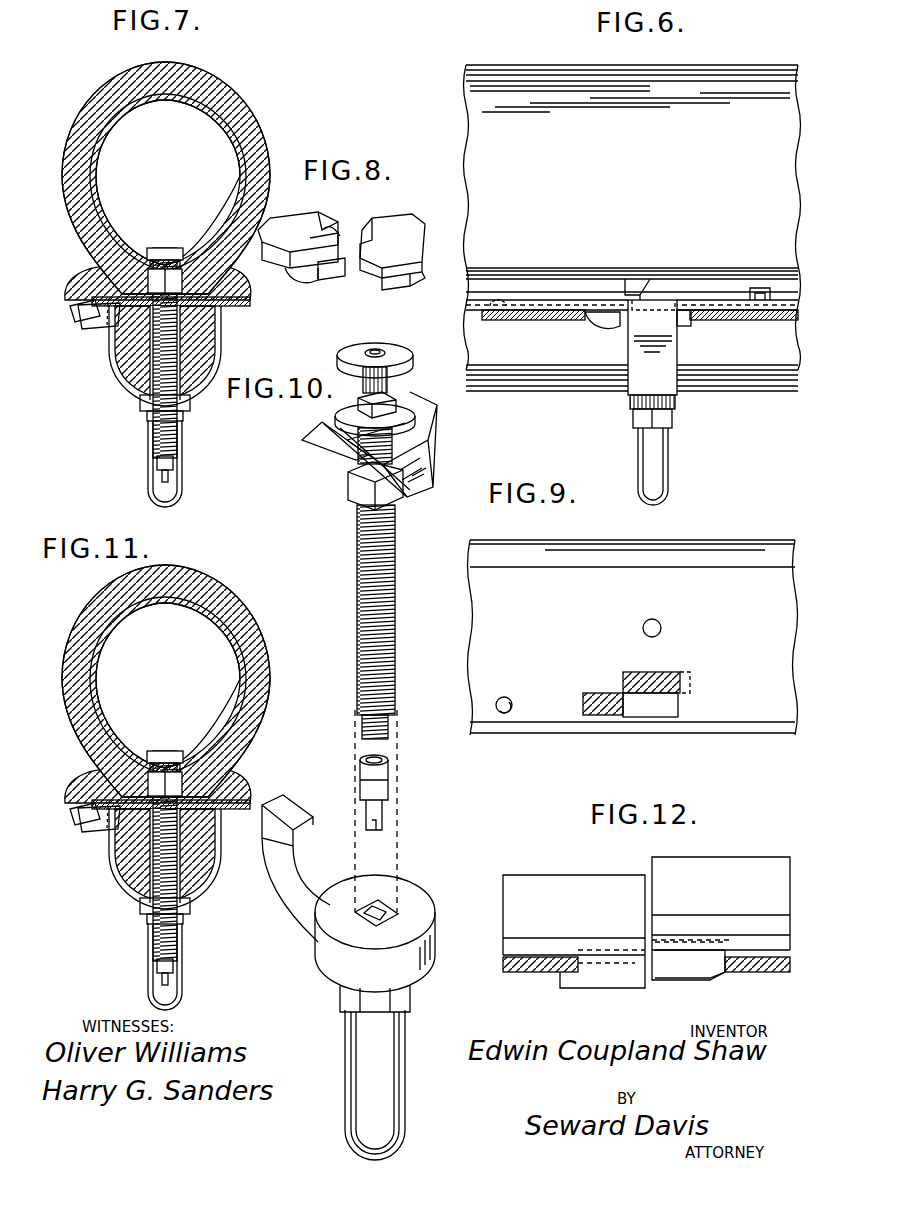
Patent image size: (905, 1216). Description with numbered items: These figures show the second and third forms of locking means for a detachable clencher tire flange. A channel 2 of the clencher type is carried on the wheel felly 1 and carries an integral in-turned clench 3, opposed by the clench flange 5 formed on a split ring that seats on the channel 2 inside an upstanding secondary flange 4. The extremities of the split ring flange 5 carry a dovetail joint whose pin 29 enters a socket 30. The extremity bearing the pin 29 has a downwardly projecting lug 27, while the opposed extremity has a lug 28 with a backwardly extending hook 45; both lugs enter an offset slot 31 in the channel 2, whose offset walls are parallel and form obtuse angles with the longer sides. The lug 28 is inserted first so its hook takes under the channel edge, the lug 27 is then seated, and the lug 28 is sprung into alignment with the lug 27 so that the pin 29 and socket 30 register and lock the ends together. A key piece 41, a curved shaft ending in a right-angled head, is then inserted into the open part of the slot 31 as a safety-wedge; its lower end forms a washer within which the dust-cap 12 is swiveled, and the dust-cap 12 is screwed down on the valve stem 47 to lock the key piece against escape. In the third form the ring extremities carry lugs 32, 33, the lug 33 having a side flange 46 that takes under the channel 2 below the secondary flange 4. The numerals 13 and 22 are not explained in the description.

In FIG. 6, the wheel felly 1 is at (632, 363).
In FIG. 6, the channel 2 is at (534, 320).
In FIG. 9, the channel 2 is at (633, 637).
In FIG. 12, the channel 2 is at (503, 964).
In FIG. 7, the flange or clench 3 is at (230, 290).
In FIG. 11, the flange or clench 3 is at (170, 777).
In FIG. 7, the secondary flange 4 is at (75, 312).
In FIG. 11, the secondary flange 4 is at (69, 818).
In FIG. 6, the secondary flange 4 is at (450, 322).
In FIG. 7, the split ring flange 5 is at (92, 282).
In FIG. 11, the split ring flange 5 is at (164, 681).
In FIG. 8, the split ring flange 5 is at (299, 240).
In FIG. 6, the split ring flange 5 is at (632, 291).
In FIG. 12, the split ring flange 5 is at (574, 915).
In FIG. 7, the dust-cap 12 is at (176, 458).
In FIG. 11, the dust-cap 12 is at (183, 880).
In FIG. 6, the dust-cap 12 is at (660, 448).
In FIG. 10, the dust-cap 12 is at (400, 1063).
In FIG. 6, the hole 13 is at (500, 322).
In FIG. 6, the notch 22 is at (762, 288).
In FIG. 8, the lug 27 is at (312, 282).
In FIG. 6, the lug 27 is at (604, 326).
In FIG. 9, the lug 27 is at (605, 693).
In FIG. 7, the hooked lug 28 is at (97, 324).
In FIG. 8, the hooked lug 28 is at (340, 276).
In FIG. 6, the hooked lug 28 is at (682, 325).
In FIG. 9, the hooked lug 28 is at (669, 672).
In FIG. 8, the pin member 29 is at (352, 212).
In FIG. 6, the pin member 29 is at (628, 297).
In FIG. 8, the socket member 30 is at (372, 226).
In FIG. 6, the socket member 30 is at (645, 292).
In FIG. 9, the offset slot 31 is at (680, 705).
In FIG. 12, the lug 32 is at (604, 982).
In FIG. 11, the lug 33 is at (77, 850).
In FIG. 12, the lug 33 is at (695, 952).
In FIG. 7, the key piece 41 is at (124, 360).
In FIG. 11, the key piece 41 is at (149, 866).
In FIG. 6, the key piece 41 is at (642, 354).
In FIG. 10, the key piece 41 is at (280, 865).
In FIG. 8, the hook 45 is at (402, 290).
In FIG. 10, the hook 45 is at (369, 451).
In FIG. 11, the side flange 46 is at (78, 836).
In FIG. 12, the side flange 46 is at (665, 972).
In FIG. 10, the valve stem 47 is at (396, 585).